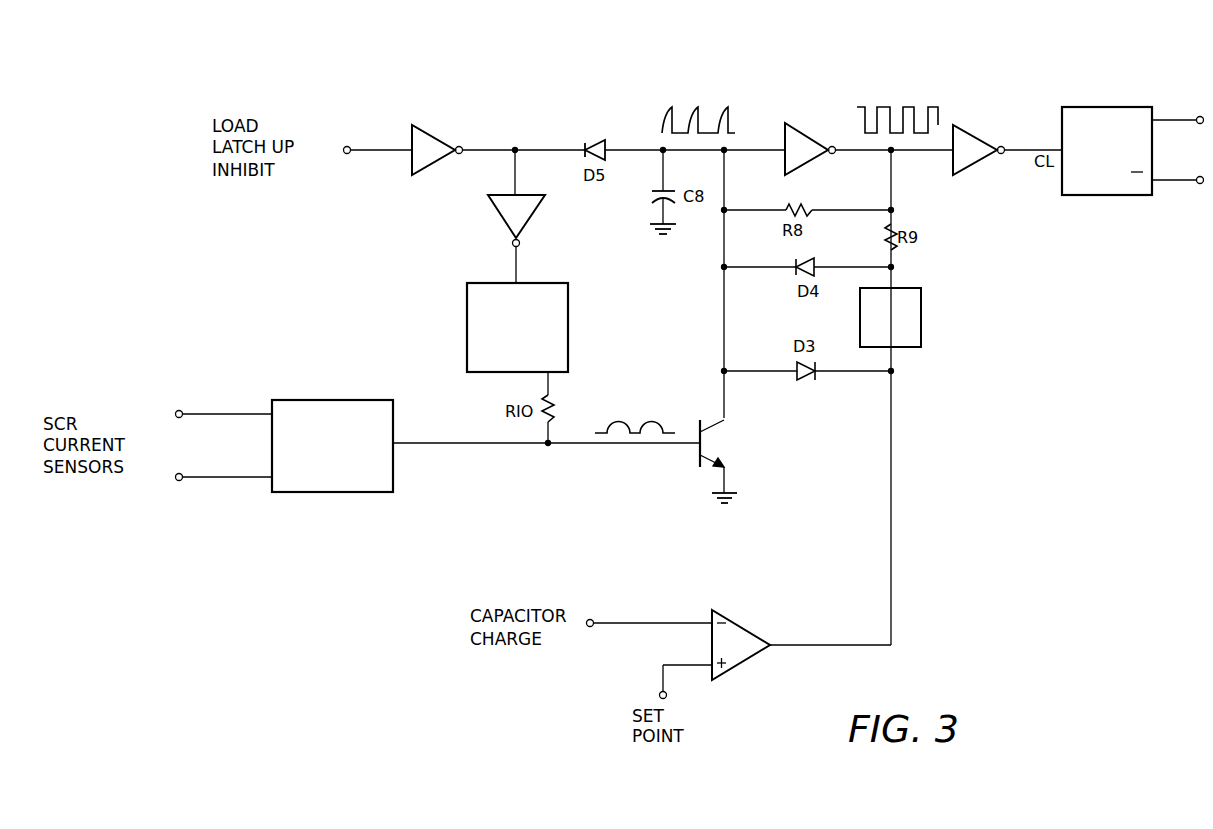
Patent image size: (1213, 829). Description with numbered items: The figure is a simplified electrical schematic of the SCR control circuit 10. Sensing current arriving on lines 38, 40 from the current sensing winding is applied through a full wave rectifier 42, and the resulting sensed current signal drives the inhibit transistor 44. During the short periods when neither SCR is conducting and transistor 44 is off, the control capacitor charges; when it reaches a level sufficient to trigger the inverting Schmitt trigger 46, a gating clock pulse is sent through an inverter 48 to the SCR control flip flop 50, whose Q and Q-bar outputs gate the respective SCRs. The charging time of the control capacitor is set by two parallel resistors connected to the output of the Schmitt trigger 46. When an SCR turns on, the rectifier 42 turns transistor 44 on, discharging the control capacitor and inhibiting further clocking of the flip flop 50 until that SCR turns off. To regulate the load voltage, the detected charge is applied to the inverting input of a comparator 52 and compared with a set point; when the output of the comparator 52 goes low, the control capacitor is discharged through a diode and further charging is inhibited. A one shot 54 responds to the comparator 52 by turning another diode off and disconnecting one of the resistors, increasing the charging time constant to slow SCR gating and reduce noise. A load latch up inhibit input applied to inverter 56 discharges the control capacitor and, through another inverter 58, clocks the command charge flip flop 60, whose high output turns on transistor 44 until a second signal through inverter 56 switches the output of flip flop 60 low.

The SCR control circuit 10 is at (802, 76).
The sensing current line 38 is at (231, 412).
The sensing current line 40 is at (235, 479).
The full wave rectifier 42 is at (357, 493).
The inhibit transistor 44 is at (708, 447).
The inverting Schmitt trigger 46 is at (797, 123).
The inverter 48 is at (972, 136).
The SCR control flip flop 50 is at (1105, 105).
The comparator 52 is at (748, 660).
The one shot 54 is at (922, 320).
The inverter 56 is at (432, 133).
The inverter 58 is at (527, 223).
The command charge flip flop 60 is at (570, 341).